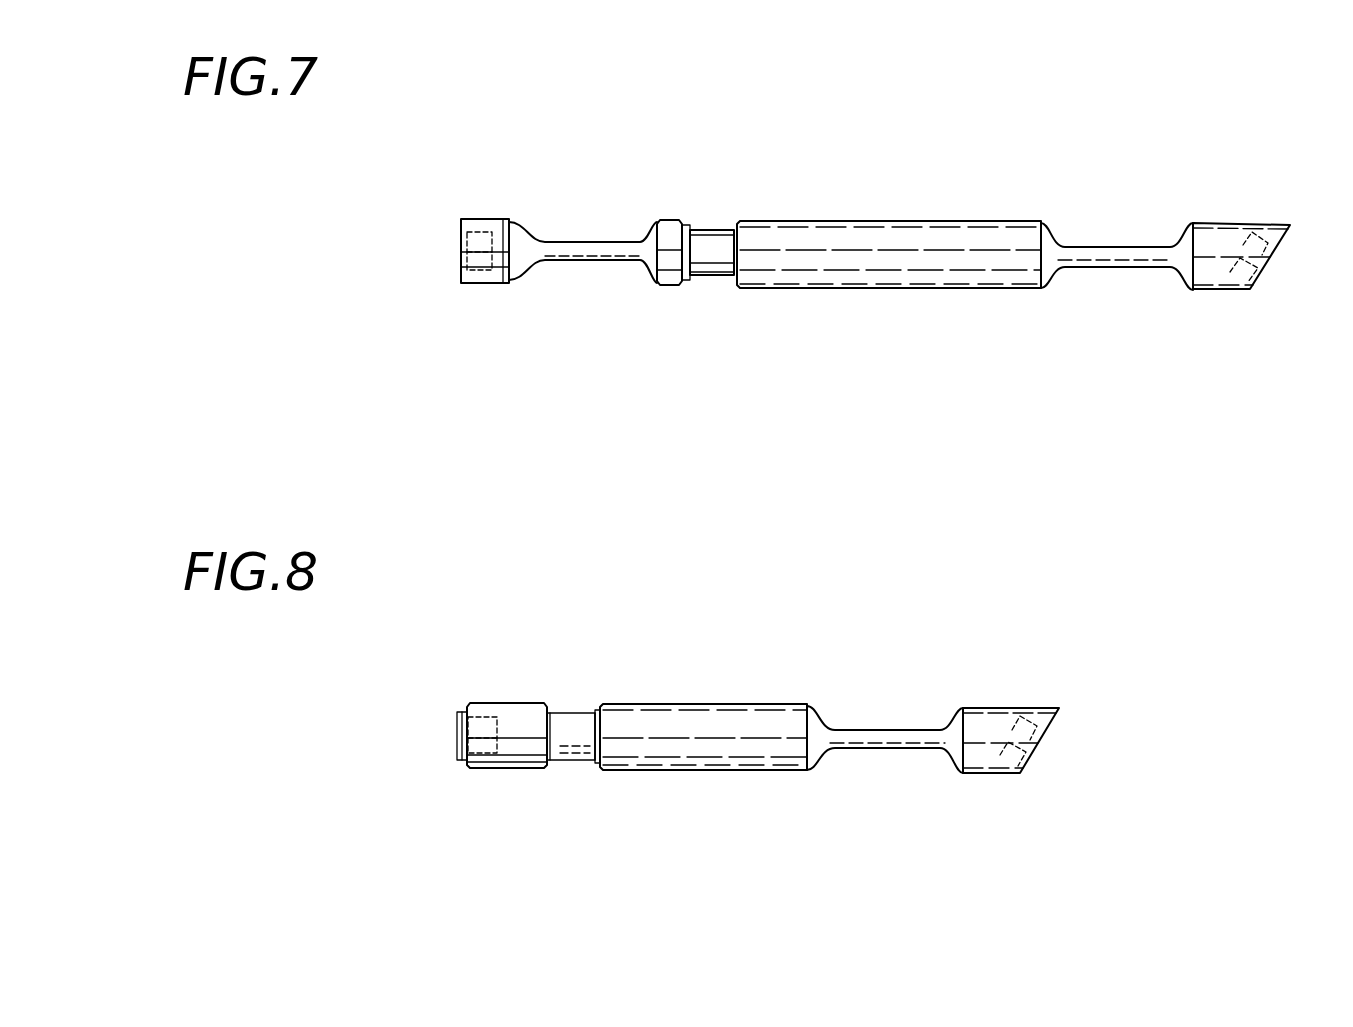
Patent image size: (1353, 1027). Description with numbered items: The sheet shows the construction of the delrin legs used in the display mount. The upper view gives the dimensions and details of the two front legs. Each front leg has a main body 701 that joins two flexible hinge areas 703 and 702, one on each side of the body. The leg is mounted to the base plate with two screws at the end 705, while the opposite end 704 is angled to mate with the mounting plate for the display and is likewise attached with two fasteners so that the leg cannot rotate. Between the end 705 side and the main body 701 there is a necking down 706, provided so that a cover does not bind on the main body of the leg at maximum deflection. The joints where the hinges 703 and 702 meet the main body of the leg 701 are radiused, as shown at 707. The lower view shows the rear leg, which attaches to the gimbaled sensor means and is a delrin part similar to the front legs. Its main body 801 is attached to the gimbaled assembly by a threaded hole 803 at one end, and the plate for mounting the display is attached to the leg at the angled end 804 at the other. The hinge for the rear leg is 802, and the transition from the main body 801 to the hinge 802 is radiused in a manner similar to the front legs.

In FIG. 7, the main body of the delrin leg 701 is at (877, 290).
In FIG. 7, the flexible hinge area 702 is at (1097, 247).
In FIG. 7, the flexible hinge area 703 is at (553, 263).
In FIG. 7, the angled end 704 is at (1270, 267).
In FIG. 7, the end 705 is at (461, 272).
In FIG. 7, the necking down 706 is at (705, 230).
In FIG. 7, the radiused joint 707 is at (655, 232).
In FIG. 8, the main body 801 is at (706, 772).
In FIG. 8, the hinge 802 is at (870, 730).
In FIG. 8, the threaded hole 803 is at (453, 740).
In FIG. 8, the angled end 804 is at (1040, 748).